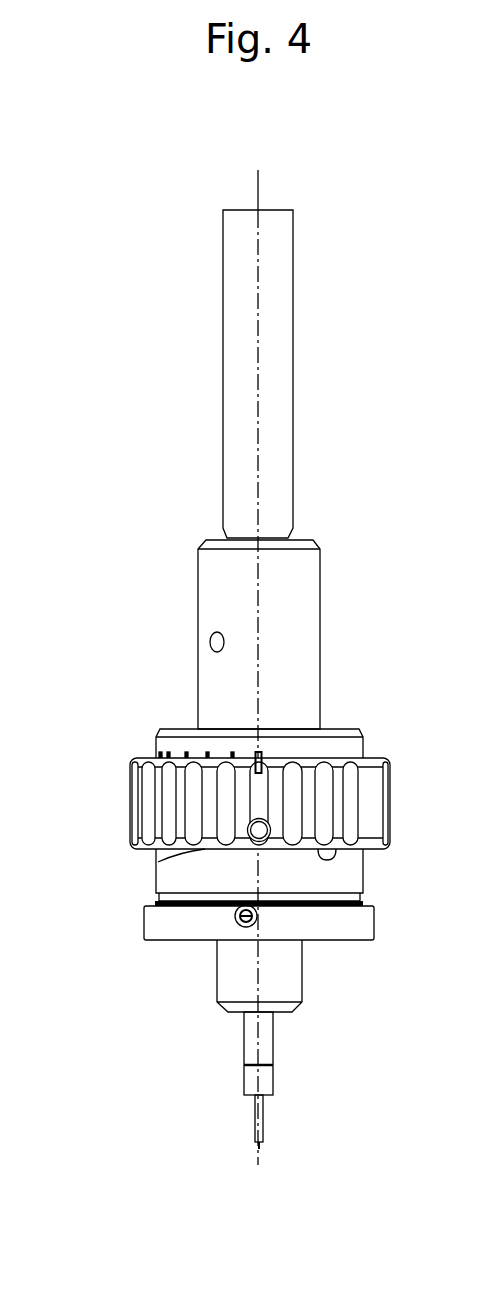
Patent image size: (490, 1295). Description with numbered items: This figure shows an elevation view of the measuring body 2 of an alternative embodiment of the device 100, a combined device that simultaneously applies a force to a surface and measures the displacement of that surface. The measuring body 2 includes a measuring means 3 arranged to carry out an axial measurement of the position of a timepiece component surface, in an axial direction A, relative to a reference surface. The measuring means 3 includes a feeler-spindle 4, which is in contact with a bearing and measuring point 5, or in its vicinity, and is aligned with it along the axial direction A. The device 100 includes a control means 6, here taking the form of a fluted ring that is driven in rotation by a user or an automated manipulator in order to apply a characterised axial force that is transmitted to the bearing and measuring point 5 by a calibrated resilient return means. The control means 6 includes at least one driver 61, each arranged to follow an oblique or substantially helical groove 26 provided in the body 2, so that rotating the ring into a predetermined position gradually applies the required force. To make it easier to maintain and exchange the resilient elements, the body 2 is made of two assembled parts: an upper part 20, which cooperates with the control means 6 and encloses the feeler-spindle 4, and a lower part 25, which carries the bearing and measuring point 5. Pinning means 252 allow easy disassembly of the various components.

The device 100 is at (116, 514).
The measuring body 2 is at (366, 711).
The measuring means 3 is at (326, 291).
The feeler-spindle 4 is at (274, 368).
The axial direction A is at (266, 402).
The upper part 20 is at (303, 587).
The control means 6 is at (400, 774).
The driver 61 is at (250, 840).
The helical groove 26 is at (333, 853).
The lower part 25 is at (348, 924).
The pinning means 252 is at (236, 917).
The bearing and measuring point 5 is at (264, 1085).